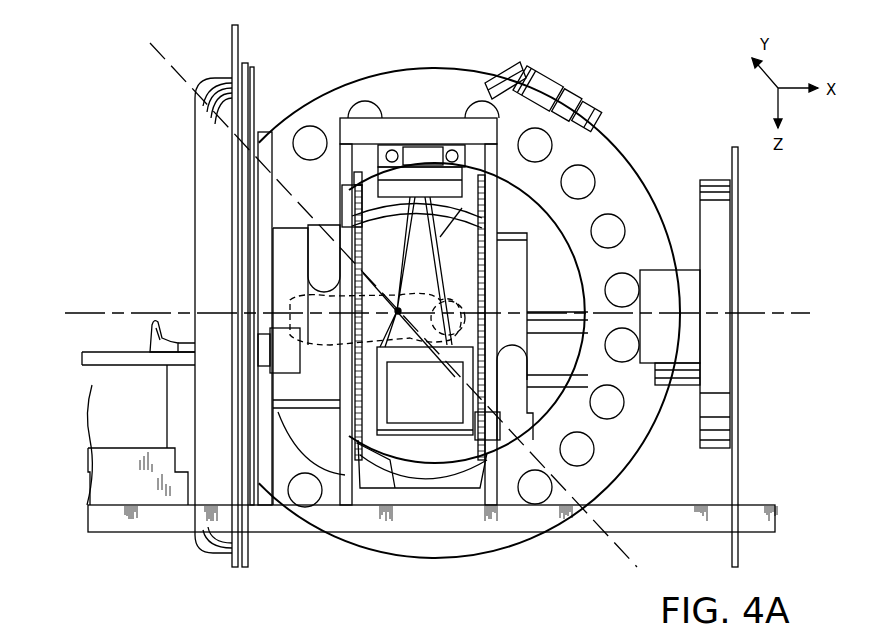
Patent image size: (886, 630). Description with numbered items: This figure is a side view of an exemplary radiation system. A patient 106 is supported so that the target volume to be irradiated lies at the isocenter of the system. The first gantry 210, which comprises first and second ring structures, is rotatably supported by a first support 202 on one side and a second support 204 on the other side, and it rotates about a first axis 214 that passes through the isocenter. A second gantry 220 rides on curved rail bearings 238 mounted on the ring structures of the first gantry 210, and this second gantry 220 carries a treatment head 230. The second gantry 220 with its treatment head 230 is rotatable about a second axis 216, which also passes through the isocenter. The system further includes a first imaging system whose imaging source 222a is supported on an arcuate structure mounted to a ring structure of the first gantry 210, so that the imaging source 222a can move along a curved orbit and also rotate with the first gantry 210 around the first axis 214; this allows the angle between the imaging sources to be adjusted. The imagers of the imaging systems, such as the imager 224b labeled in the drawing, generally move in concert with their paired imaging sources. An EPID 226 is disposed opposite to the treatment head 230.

The patient 106 is at (155, 330).
The first support plate 202 is at (202, 138).
The second support plate 204 is at (720, 350).
The rotating gantry ring 210 is at (416, 85).
The rotation axis 214 is at (768, 313).
The tilt axis 216 is at (160, 53).
The drive mount 220 is at (500, 80).
The x-ray source 222a is at (440, 150).
The detector 224b is at (428, 407).
The detector frame 226 is at (380, 470).
The drive motor 230 is at (575, 75).
The bearing 238 is at (310, 621).